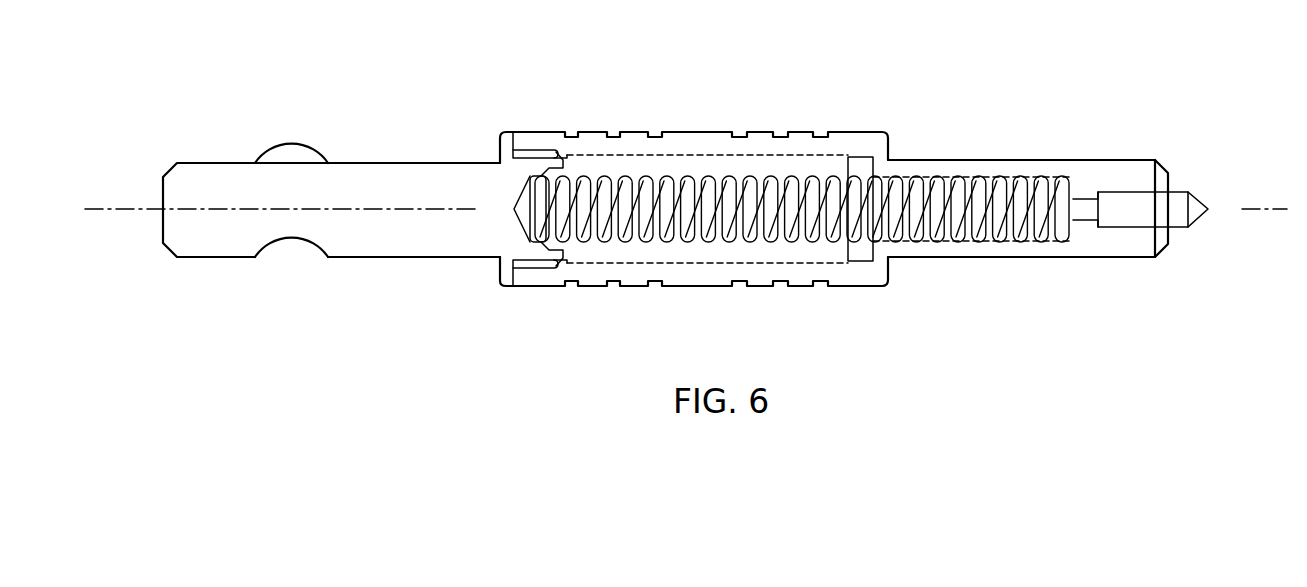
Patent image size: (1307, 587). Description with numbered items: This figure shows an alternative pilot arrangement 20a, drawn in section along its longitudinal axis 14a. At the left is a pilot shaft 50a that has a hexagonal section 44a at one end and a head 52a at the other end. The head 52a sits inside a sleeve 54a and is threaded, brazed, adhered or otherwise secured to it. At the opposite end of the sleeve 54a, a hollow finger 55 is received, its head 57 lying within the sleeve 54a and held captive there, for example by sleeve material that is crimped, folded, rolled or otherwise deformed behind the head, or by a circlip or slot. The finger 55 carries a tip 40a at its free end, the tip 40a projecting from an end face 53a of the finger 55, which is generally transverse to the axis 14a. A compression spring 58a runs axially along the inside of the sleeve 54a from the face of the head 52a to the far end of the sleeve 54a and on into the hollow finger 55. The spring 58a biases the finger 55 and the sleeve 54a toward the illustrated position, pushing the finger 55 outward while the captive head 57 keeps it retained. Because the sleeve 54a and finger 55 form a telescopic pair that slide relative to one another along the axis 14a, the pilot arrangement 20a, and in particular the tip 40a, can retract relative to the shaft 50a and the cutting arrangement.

The pilot arrangement 20a is at (853, 68).
The axis 14a is at (123, 212).
The hexagonal section 44a is at (231, 281).
The pilot shaft 50a is at (403, 207).
The sleeve 54a is at (709, 280).
The head 52a is at (532, 254).
The compression spring 58a is at (710, 177).
The head 57 is at (867, 253).
The hollow finger 55 is at (1002, 250).
The end face 53a is at (1172, 183).
The tip 40a is at (1194, 246).